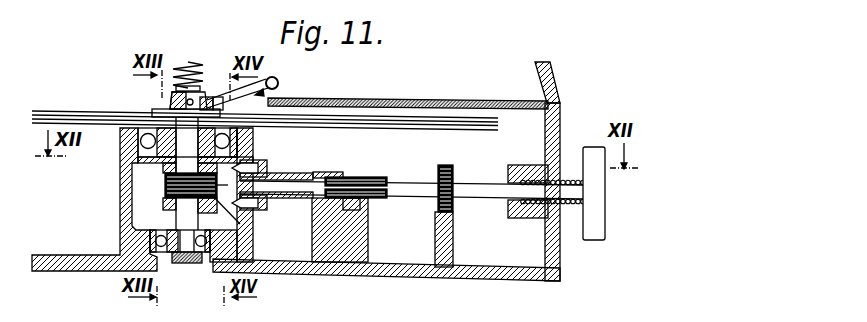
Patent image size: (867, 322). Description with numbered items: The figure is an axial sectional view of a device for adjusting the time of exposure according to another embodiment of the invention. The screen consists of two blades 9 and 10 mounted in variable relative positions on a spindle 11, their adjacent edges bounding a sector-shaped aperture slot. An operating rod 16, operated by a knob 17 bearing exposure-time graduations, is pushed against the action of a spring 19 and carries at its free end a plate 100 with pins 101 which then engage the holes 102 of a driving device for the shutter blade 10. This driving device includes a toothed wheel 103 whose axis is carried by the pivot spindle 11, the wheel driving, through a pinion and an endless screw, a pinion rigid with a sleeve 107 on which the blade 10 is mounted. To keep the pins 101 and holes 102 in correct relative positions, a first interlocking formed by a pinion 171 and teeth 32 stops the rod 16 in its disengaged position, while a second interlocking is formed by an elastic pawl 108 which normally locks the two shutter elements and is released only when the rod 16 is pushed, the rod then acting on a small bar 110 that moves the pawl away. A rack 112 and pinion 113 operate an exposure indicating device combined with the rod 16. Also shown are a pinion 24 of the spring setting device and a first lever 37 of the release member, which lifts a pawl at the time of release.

The blade 9 is at (373, 122).
The blade 10 is at (330, 114).
The spindle 11 is at (194, 126).
The operating rod 16 is at (398, 183).
The operating knob 17 is at (590, 150).
The pinion 171 is at (454, 171).
The spring 19 is at (568, 205).
The pinion 24 is at (185, 62).
The teeth 32 is at (454, 221).
The first lever 37 is at (282, 92).
The plate 100 is at (264, 168).
The pins 101 is at (262, 205).
The holes 102 is at (298, 270).
The toothed wheel 103 is at (203, 212).
The sleeve 107 is at (138, 158).
The elastic pawl 108 is at (166, 188).
The small bar 110 is at (165, 212).
The rack 112 is at (361, 201).
The pinion 113 is at (357, 178).